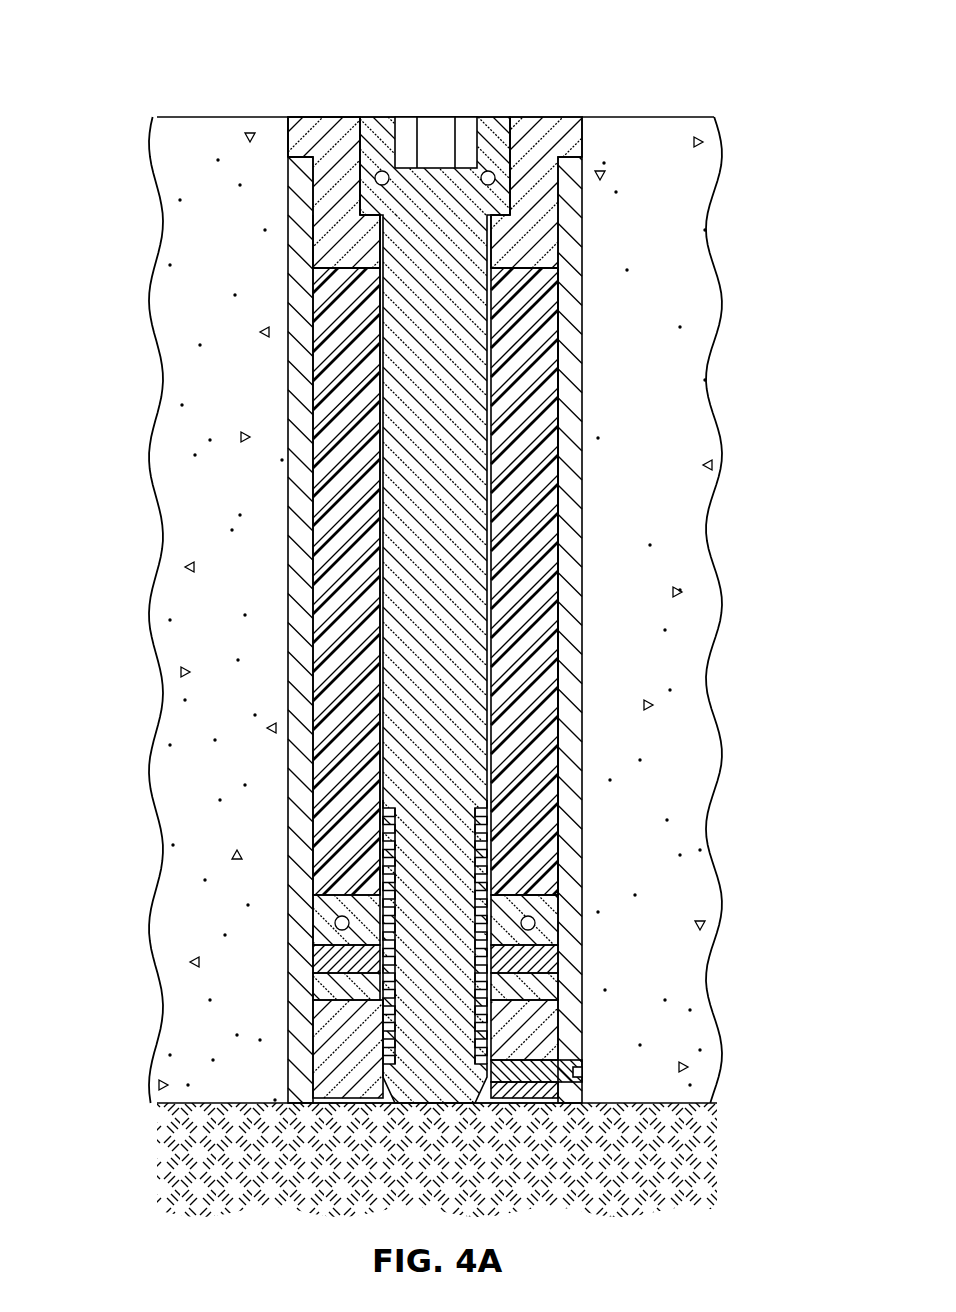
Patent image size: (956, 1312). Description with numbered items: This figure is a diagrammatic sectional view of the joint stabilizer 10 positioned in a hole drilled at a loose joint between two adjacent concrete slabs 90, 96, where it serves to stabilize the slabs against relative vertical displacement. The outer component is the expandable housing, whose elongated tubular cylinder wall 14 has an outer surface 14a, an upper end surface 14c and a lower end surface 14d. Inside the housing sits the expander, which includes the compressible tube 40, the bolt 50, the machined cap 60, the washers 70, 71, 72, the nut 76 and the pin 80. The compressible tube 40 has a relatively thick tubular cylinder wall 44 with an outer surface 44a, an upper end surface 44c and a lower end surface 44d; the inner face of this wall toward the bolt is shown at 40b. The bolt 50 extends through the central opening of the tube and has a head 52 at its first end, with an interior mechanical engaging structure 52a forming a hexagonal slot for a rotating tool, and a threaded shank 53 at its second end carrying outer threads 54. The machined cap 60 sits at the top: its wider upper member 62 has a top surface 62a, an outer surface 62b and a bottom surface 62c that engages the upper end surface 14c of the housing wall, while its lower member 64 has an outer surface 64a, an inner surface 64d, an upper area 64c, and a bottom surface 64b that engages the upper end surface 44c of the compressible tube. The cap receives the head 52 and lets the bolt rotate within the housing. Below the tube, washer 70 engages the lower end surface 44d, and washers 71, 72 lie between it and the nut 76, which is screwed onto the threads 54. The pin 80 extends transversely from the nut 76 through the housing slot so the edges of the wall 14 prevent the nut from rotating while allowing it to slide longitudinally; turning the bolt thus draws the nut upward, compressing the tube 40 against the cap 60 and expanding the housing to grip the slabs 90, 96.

The joint stabilizer 10 is at (436, 578).
The tubular cylinder wall 14 is at (478, 643).
The outer surface 14a is at (584, 352).
The upper end surface 14c is at (580, 160).
The lower end surface 14d is at (570, 1107).
The compressible tube 40 is at (491, 581).
The first sleeve inner surface 40b is at (488, 575).
The tubular cylinder wall 44 is at (580, 583).
The outer surface 44a is at (558, 418).
The upper end surface 44c is at (530, 268).
The lower end surface 44d is at (535, 898).
The bolt 50 is at (507, 573).
The head 52 is at (488, 117).
The mechanical engaging structure 52a is at (445, 137).
The shank 53 is at (463, 855).
The threads 54 is at (488, 830).
The machined cap 60 is at (428, 175).
The upper member 62 is at (583, 128).
The top surface 62a is at (325, 117).
The outer surface 62b is at (287, 130).
The bottom surface 62c is at (307, 167).
The lower member 64 is at (540, 240).
The outer surface 64a is at (310, 212).
The bottom surface 64b is at (345, 270).
The ring upper surface 64c is at (363, 207).
The inner surface 64d is at (385, 250).
The washer 70 is at (545, 922).
The washer 71 is at (547, 960).
The washer 72 is at (545, 990).
The nut 76 is at (547, 1022).
The pin 80 is at (582, 1073).
The concrete slab 90 is at (677, 722).
The concrete slab 96 is at (205, 722).